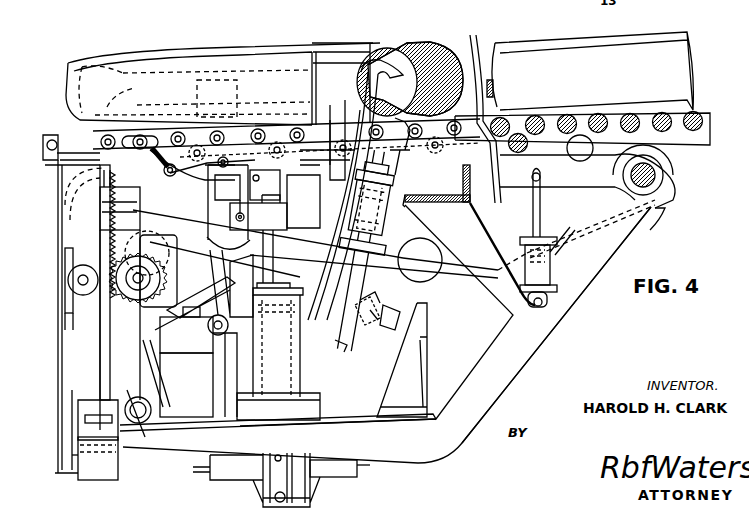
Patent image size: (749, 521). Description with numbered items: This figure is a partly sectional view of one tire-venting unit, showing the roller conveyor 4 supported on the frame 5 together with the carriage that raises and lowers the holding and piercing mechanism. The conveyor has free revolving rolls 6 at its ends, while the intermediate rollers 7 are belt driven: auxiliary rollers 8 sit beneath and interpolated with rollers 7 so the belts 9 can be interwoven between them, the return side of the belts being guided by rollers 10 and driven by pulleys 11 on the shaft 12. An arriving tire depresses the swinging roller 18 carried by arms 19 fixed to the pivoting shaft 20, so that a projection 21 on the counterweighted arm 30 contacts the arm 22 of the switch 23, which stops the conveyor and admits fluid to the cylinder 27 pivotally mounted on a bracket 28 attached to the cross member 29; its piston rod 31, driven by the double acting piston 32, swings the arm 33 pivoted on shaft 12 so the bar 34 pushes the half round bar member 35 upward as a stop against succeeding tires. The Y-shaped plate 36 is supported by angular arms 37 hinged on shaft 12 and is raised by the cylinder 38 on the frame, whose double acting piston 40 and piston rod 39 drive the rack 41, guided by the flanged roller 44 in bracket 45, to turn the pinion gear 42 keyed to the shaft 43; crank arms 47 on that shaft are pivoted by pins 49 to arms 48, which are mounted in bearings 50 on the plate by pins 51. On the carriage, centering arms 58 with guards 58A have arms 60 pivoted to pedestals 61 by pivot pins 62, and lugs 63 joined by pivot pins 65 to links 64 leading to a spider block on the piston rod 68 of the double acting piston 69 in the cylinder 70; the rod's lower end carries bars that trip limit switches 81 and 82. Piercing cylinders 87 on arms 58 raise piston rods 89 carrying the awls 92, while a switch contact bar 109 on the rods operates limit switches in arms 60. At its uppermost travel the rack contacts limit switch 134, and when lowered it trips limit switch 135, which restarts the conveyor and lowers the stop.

The roller conveyor 4 is at (707, 133).
The frame 5 is at (57, 353).
The free revolving rolls 6 is at (55, 128).
The intermediate rollers 7 is at (592, 110).
The auxiliary rollers 8 is at (578, 150).
The belts 9 is at (657, 205).
The rollers 10 is at (62, 197).
The pulleys 11 is at (673, 185).
The shaft 12 is at (658, 173).
The swinging roller 18 is at (140, 140).
The arms 19 is at (158, 150).
The pivoting shaft 20 is at (257, 113).
The projection 21 is at (232, 195).
The arm 22 is at (258, 212).
The switch 23 is at (287, 227).
The fluid pressure cylinder 27 is at (547, 268).
The bracket 28 is at (477, 245).
The cross member 29 is at (463, 180).
The arm 30 is at (215, 182).
The piston rod 31 is at (553, 217).
The double acting piston 32 is at (500, 266).
The arm 33 is at (573, 187).
The bar 34 is at (475, 60).
The half round bar member 35 is at (492, 80).
The plate 36 is at (345, 422).
The angular arms 37 is at (533, 345).
The fluid pressure cylinder 38 is at (90, 467).
The piston rod 39 is at (100, 387).
The double acting piston 40 is at (57, 452).
The rack 41 is at (100, 230).
The pinion gear 42 is at (173, 270).
The shaft 43 is at (160, 262).
The flanged roller 44 is at (80, 258).
The bracket 45 is at (65, 310).
The crank arms 47 is at (150, 260).
The arms 48 is at (128, 383).
The pins 49 is at (148, 235).
The bearings 50 is at (152, 425).
The pins 51 is at (138, 413).
The arms 58 is at (354, 196).
The guards 58A is at (388, 46).
The arms 60 is at (383, 310).
The pedestals 61 is at (420, 342).
The pivot pins 62 is at (222, 315).
The lugs 63 is at (352, 127).
The links 64 is at (318, 180).
The pivot pins 65 is at (352, 135).
The piston rod 68 is at (275, 270).
The double acting piston 69 is at (297, 350).
The fluid pressure cylinder 70 is at (300, 384).
The limit switch 81 is at (347, 467).
The limit switch 82 is at (223, 468).
The fluid pressure cylinders 87 is at (378, 222).
The piston rods 89 is at (360, 253).
The awls 92 is at (403, 123).
The switch contact bar 109 is at (333, 345).
The limit switch 134 is at (108, 176).
The limit switch 135 is at (127, 383).